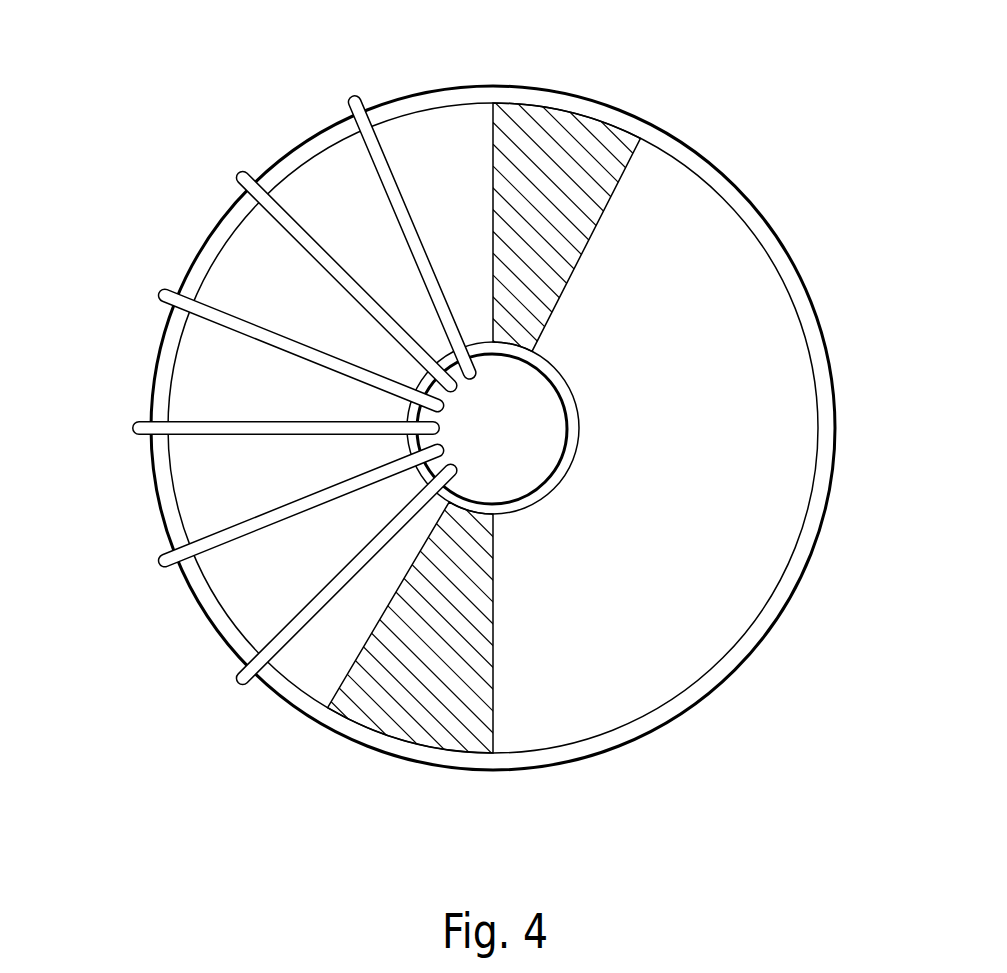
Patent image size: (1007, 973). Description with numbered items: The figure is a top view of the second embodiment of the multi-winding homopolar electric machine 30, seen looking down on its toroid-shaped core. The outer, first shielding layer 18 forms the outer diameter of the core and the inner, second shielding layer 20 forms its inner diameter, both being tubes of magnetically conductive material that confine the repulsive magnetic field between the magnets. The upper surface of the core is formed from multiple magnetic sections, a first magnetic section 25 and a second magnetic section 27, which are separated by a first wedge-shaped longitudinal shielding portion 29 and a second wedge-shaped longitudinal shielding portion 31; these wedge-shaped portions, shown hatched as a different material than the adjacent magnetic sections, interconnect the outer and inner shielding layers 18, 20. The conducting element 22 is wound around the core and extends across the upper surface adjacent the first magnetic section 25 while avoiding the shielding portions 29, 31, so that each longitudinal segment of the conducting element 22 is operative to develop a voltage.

The first shielding layer 18 is at (782, 243).
The second shielding layer 20 is at (560, 385).
The conducting element 22 is at (240, 178).
The first magnetic section 25 is at (202, 472).
The second magnetic section 27 is at (772, 387).
The first wedge-shaped longitudinal shielding portion 29 is at (535, 128).
The multi-winding homopolar electric machine 30 is at (478, 468).
The second wedge-shaped longitudinal shielding portion 31 is at (467, 731).